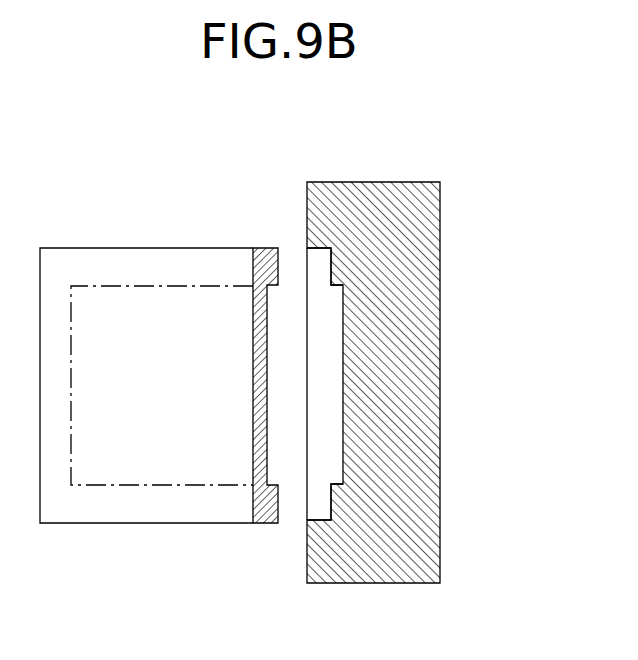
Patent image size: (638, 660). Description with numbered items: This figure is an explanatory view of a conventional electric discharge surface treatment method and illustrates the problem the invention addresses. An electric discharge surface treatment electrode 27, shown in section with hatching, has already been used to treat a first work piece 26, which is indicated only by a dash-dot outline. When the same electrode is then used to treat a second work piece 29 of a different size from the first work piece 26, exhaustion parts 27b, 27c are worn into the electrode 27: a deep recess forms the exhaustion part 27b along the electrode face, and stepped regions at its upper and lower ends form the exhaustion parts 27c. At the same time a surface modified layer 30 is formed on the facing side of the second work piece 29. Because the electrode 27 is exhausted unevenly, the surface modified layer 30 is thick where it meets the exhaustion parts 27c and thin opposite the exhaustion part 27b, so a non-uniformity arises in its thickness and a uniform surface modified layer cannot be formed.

The first work piece 26 is at (149, 285).
The electric discharge surface treatment electrode 27 is at (425, 302).
The exhaustion part 27b is at (332, 399).
The exhaustion part 27c is at (312, 265).
The second work piece 29 is at (65, 505).
The surface modified layer 30 is at (265, 248).